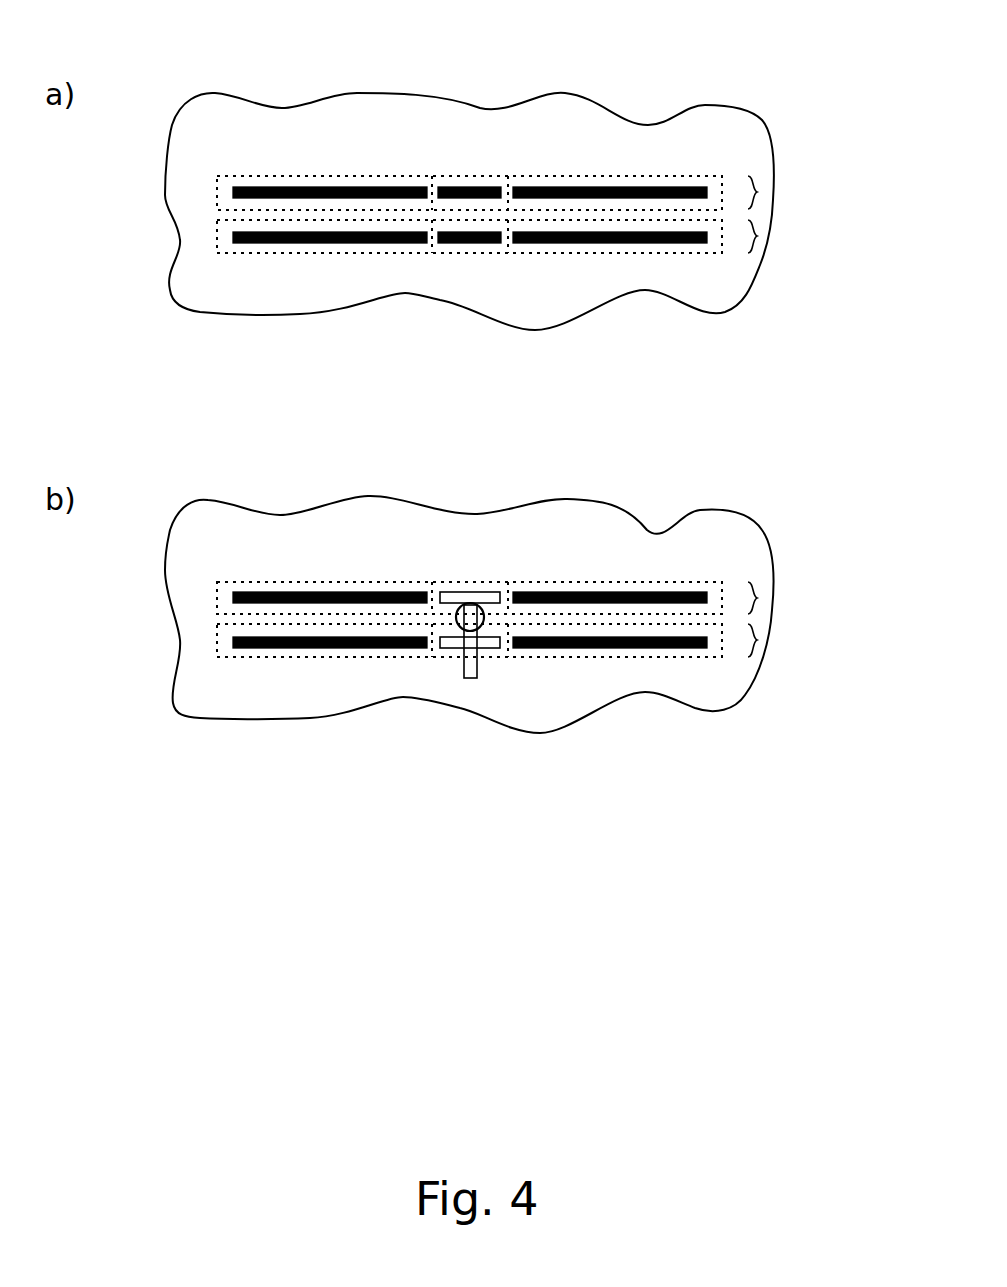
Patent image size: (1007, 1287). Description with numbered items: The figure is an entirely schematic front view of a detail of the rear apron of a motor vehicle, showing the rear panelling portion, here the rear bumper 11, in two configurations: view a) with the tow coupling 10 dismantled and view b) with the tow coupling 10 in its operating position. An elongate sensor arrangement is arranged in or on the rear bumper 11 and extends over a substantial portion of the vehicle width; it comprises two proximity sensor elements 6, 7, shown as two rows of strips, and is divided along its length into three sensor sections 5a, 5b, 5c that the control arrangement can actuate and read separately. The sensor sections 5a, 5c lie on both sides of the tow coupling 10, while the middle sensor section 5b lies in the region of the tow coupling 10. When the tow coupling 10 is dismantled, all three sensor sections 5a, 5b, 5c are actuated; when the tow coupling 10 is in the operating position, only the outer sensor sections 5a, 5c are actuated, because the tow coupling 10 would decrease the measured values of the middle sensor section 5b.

The sensor section 5a is at (308, 175).
The sensor section 5b is at (460, 175).
The sensor section 5c is at (572, 177).
The sensor element 6 is at (757, 192).
The sensor element 7 is at (757, 236).
The tow coupling 10 is at (478, 674).
The rear bumper 11 is at (205, 298).